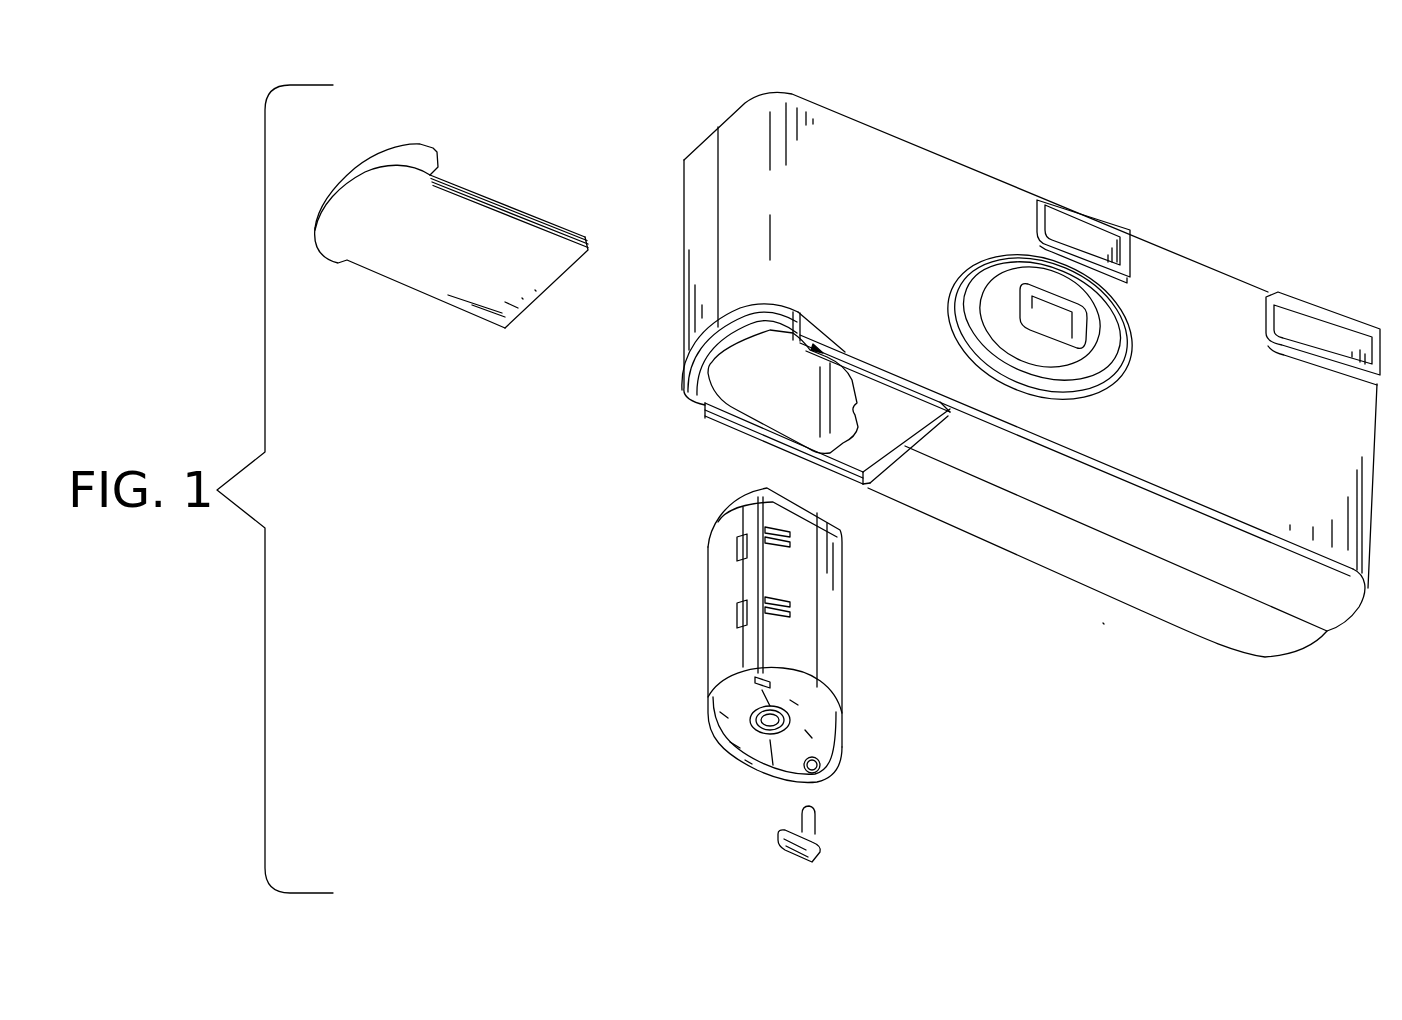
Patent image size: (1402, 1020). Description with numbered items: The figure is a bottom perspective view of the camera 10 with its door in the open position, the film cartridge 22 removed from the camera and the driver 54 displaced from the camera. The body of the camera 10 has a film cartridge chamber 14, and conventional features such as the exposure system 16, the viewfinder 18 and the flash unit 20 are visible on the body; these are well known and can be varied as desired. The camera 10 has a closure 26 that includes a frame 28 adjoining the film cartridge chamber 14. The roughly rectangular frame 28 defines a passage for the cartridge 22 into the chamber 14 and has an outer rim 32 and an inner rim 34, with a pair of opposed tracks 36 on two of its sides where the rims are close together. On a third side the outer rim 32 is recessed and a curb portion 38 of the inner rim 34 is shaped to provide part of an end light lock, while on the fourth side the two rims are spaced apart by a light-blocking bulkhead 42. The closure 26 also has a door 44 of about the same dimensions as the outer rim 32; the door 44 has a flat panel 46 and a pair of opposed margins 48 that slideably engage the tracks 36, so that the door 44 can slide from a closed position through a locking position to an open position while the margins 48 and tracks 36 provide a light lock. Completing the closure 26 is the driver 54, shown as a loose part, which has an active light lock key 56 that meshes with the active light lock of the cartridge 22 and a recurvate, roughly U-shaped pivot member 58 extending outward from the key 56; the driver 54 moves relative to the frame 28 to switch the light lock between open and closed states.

The camera 10 is at (1272, 655).
The film cartridge chamber 14 is at (780, 417).
The exposure system 16 is at (1032, 305).
The viewfinder 18 is at (1107, 230).
The flash unit 20 is at (1318, 313).
The film cartridge 22 is at (708, 570).
The closure 26 is at (903, 410).
The frame 28 is at (852, 362).
The outer rim 32 is at (820, 346).
The inner rim 34 is at (798, 312).
The tracks 36 is at (777, 335).
The curb portion 38 is at (690, 393).
The light-blocking bulkhead 42 is at (877, 458).
The door 44 is at (400, 275).
The flat panel 46 is at (562, 272).
The margins 48 is at (498, 197).
The driver 54 is at (787, 830).
The active light lock key 56 is at (823, 840).
The pivot member 58 is at (776, 824).